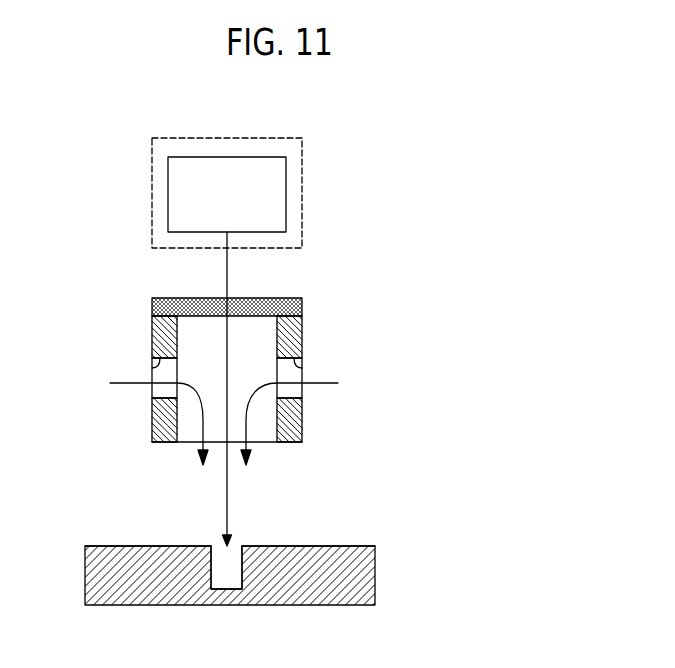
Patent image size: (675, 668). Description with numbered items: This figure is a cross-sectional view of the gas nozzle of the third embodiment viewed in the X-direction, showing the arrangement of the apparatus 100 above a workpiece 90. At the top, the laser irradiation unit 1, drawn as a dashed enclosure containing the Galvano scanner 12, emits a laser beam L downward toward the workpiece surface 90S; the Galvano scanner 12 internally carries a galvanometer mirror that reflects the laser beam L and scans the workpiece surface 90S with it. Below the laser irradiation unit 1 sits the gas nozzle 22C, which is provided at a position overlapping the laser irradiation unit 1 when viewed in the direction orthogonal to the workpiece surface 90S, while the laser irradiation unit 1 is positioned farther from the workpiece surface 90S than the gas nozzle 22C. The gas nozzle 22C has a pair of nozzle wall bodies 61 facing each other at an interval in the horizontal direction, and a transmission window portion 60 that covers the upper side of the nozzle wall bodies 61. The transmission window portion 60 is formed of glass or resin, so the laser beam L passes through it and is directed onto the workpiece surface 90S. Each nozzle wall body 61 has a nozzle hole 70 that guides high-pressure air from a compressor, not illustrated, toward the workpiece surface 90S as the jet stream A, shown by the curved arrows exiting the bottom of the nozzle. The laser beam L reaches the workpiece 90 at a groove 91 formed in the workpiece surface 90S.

The processing apparatus 100 is at (453, 152).
The laser irradiation unit 1 is at (305, 136).
The Galvano scanner 12 is at (218, 175).
The gas nozzle 22C is at (226, 333).
The transmission window portion 60 is at (152, 303).
The nozzle hole 70 is at (152, 370).
The nozzle wall body 61 is at (152, 425).
The laser beam L is at (229, 518).
The jet stream A is at (224, 441).
The workpiece 90 is at (359, 544).
The workpiece surface 90S is at (120, 546).
The groove 91 is at (217, 573).